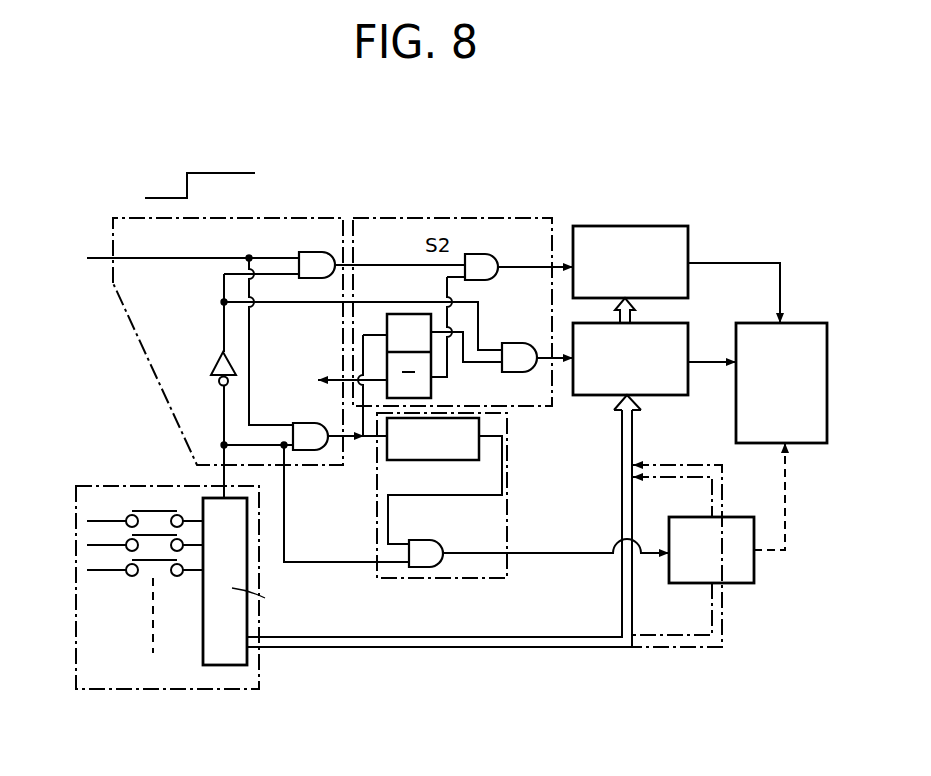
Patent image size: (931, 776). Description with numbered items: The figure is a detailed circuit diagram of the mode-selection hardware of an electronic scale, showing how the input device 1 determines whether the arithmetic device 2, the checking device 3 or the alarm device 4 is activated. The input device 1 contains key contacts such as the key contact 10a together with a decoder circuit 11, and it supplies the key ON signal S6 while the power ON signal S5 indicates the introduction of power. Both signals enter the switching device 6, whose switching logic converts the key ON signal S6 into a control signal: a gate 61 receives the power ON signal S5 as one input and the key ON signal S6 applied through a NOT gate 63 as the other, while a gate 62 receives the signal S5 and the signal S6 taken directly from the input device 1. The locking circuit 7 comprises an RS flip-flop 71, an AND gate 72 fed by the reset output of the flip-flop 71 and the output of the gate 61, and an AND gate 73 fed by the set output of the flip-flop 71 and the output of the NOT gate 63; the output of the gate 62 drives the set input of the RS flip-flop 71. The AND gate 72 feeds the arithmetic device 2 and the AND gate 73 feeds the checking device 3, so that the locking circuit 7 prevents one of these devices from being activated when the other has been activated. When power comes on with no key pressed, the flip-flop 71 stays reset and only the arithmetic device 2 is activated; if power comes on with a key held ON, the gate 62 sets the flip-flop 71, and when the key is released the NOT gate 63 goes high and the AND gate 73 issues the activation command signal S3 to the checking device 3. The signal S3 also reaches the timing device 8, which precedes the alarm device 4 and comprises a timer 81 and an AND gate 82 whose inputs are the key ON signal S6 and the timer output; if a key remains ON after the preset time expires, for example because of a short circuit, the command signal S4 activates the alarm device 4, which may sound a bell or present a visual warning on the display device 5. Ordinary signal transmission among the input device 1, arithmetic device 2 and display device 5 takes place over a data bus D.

The input device 1 is at (212, 601).
The key contact 10a is at (153, 507).
The decoder circuit 11 is at (230, 665).
The arithmetic device 2 is at (683, 238).
The checking device 3 is at (682, 337).
The alarm device 4 is at (745, 578).
The display device 5 is at (805, 323).
The switching device 6 is at (150, 370).
The gate 61 is at (316, 252).
The gate 62 is at (308, 423).
The NOT gate 63 is at (210, 352).
The locking circuit 7 is at (463, 217).
The RS flip-flop 71 is at (432, 388).
The AND gate 72 is at (478, 254).
The AND gate 73 is at (522, 343).
The timing device 8 is at (506, 522).
The timer 81 is at (425, 452).
The AND gate 82 is at (432, 540).
The data bus D is at (500, 652).
The activation command signal S3 is at (360, 440).
The command signal S4 is at (558, 552).
The power ON signal S5 is at (214, 181).
The key ON signal S6 is at (220, 423).